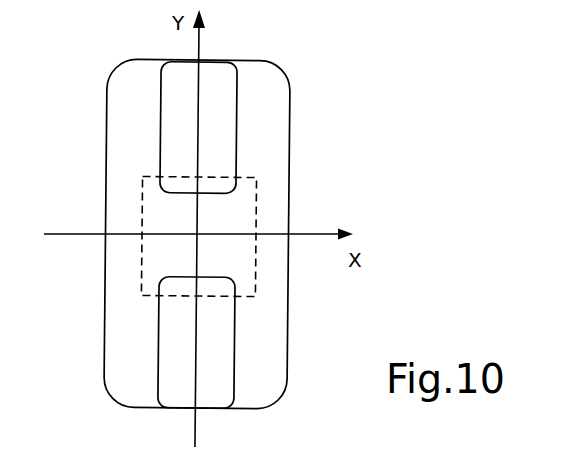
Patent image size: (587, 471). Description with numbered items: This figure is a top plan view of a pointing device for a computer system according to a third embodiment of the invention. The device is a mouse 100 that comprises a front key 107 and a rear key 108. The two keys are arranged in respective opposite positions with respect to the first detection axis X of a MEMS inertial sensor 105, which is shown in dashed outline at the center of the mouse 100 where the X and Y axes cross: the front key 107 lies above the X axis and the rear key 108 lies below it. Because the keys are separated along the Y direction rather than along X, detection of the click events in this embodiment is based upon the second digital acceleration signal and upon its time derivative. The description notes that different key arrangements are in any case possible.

The mouse 100 is at (253, 234).
The MEMS inertial sensor 105 is at (242, 271).
The front key 107 is at (160, 129).
The rear key 108 is at (158, 341).